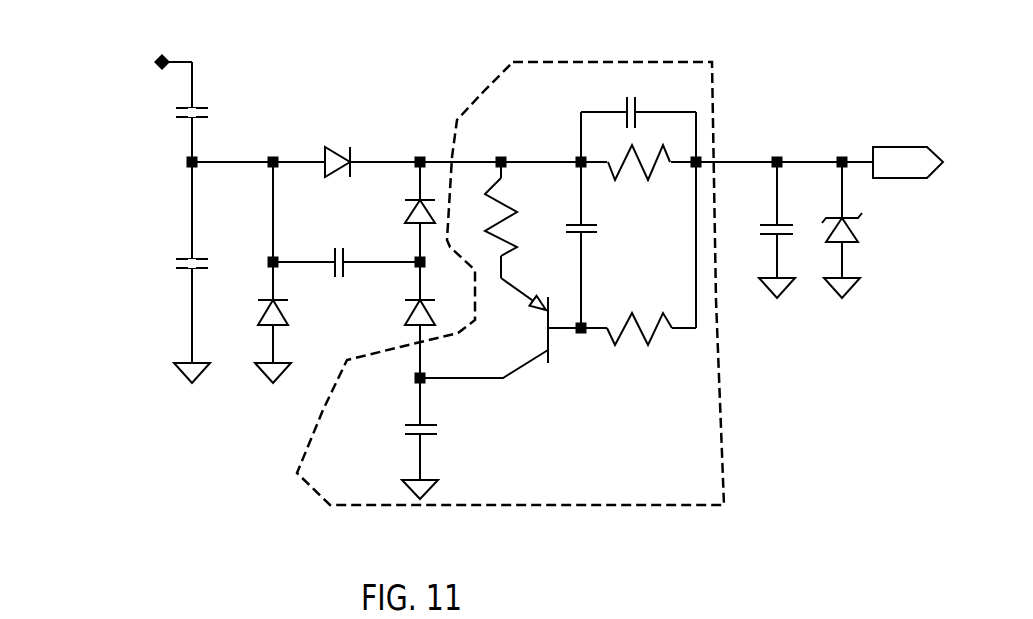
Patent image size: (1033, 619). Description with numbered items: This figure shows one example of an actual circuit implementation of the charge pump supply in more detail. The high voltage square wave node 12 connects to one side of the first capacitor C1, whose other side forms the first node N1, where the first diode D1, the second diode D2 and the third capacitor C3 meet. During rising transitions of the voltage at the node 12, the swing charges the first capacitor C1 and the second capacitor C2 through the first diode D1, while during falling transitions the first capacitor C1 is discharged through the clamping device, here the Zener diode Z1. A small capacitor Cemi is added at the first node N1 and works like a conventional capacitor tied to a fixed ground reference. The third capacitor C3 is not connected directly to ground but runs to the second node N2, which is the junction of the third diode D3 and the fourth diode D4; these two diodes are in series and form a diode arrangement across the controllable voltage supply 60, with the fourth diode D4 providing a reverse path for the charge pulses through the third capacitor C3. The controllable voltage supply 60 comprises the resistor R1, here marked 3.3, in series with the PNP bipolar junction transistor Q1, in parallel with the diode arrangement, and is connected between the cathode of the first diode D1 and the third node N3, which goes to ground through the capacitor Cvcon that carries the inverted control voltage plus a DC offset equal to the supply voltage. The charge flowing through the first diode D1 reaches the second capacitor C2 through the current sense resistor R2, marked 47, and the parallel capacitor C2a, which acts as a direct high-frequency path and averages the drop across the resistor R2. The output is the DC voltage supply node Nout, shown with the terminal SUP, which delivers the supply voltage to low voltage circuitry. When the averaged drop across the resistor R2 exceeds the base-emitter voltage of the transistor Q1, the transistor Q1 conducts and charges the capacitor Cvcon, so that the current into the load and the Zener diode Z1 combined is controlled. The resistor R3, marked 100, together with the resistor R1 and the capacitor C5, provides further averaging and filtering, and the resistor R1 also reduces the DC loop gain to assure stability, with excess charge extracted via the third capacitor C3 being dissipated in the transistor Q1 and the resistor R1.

The high voltage square wave node 12 is at (155, 62).
The controllable voltage supply 60 is at (478, 100).
The first capacitor C1 is at (116, 125).
The small capacitor Cemi is at (160, 313).
The first diode D1 is at (337, 150).
The second diode D2 is at (257, 341).
The third diode D3 is at (401, 212).
The fourth diode D4 is at (401, 314).
The third capacitor C3 is at (339, 265).
The capacitor Cvcon is at (384, 454).
The resistor R1 is at (488, 220).
The resistor R1 value 3.3 is at (489, 220).
The bipolar junction transistor Q1 is at (500, 328).
The capacitor C5 is at (595, 244).
The current sense resistor R2 is at (644, 177).
The resistor R2 value 47 is at (637, 177).
The capacitor C2a is at (622, 105).
The resistor R3 is at (639, 332).
The resistor R3 value 100 is at (639, 344).
The second capacitor C2 is at (752, 248).
The Zener diode Z1 is at (862, 252).
The first node N1 is at (271, 147).
The second node N2 is at (443, 274).
The third node N3 is at (441, 369).
The DC voltage supply node Nout is at (803, 147).
The supply output terminal SUP is at (908, 162).